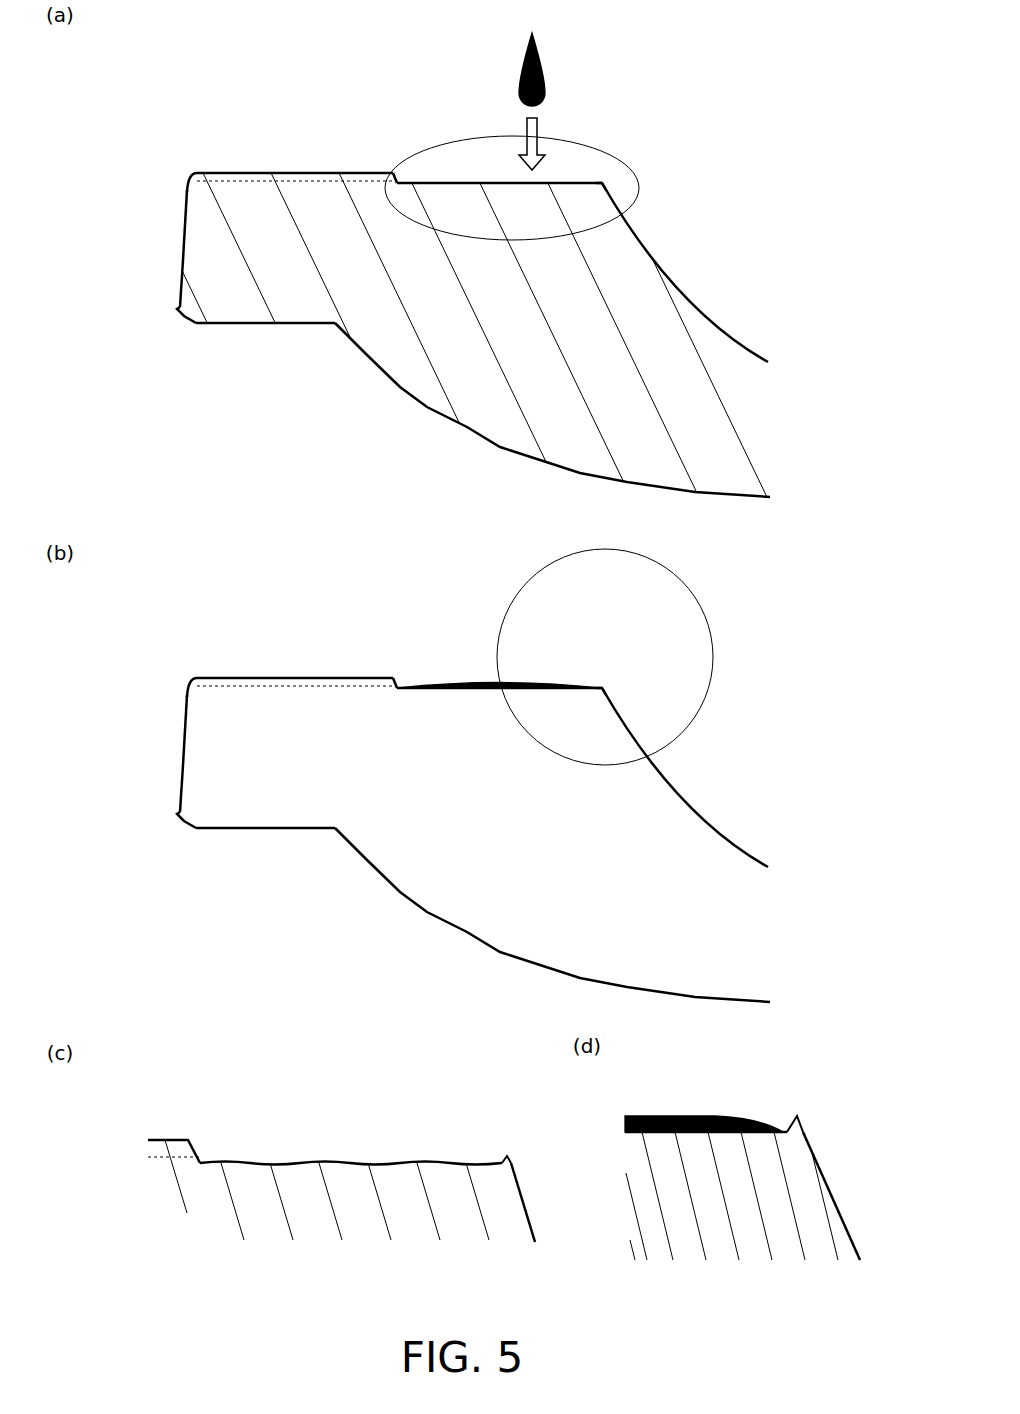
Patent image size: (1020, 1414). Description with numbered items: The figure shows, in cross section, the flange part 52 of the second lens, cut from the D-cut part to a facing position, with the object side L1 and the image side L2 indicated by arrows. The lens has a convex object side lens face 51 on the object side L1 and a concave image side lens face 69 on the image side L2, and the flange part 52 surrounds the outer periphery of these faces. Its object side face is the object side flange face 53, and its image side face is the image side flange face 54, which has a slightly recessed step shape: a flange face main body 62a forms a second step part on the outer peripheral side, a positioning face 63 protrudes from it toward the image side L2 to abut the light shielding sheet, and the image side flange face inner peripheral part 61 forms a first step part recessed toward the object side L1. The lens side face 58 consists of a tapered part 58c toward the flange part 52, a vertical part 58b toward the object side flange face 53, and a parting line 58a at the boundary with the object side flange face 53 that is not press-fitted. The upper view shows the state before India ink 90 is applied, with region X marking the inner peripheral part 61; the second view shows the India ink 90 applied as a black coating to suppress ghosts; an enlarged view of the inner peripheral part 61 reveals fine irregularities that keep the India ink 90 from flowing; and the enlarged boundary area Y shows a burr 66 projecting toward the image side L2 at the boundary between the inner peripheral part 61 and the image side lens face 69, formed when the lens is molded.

The object side lens face 51 is at (470, 428).
The flange part 52 is at (192, 171).
The object side flange face 53 is at (289, 325).
The image side flange face 54 is at (393, 175).
The lens side face 58 is at (127, 515).
The parting line 58a is at (177, 310).
The vertical part 58b is at (180, 287).
The tapered part 58c is at (185, 216).
The image side flange face inner peripheral part 61 is at (466, 182).
The flange face main body 62a is at (285, 181).
The positioning face 63 is at (305, 181).
The burr 66 is at (601, 182).
The image side lens face 69 is at (688, 292).
The India ink 90 is at (546, 70).
The region X is at (648, 189).
The boundary area Y is at (713, 657).
The object side L1 is at (809, 440).
The image side L2 is at (809, 110).